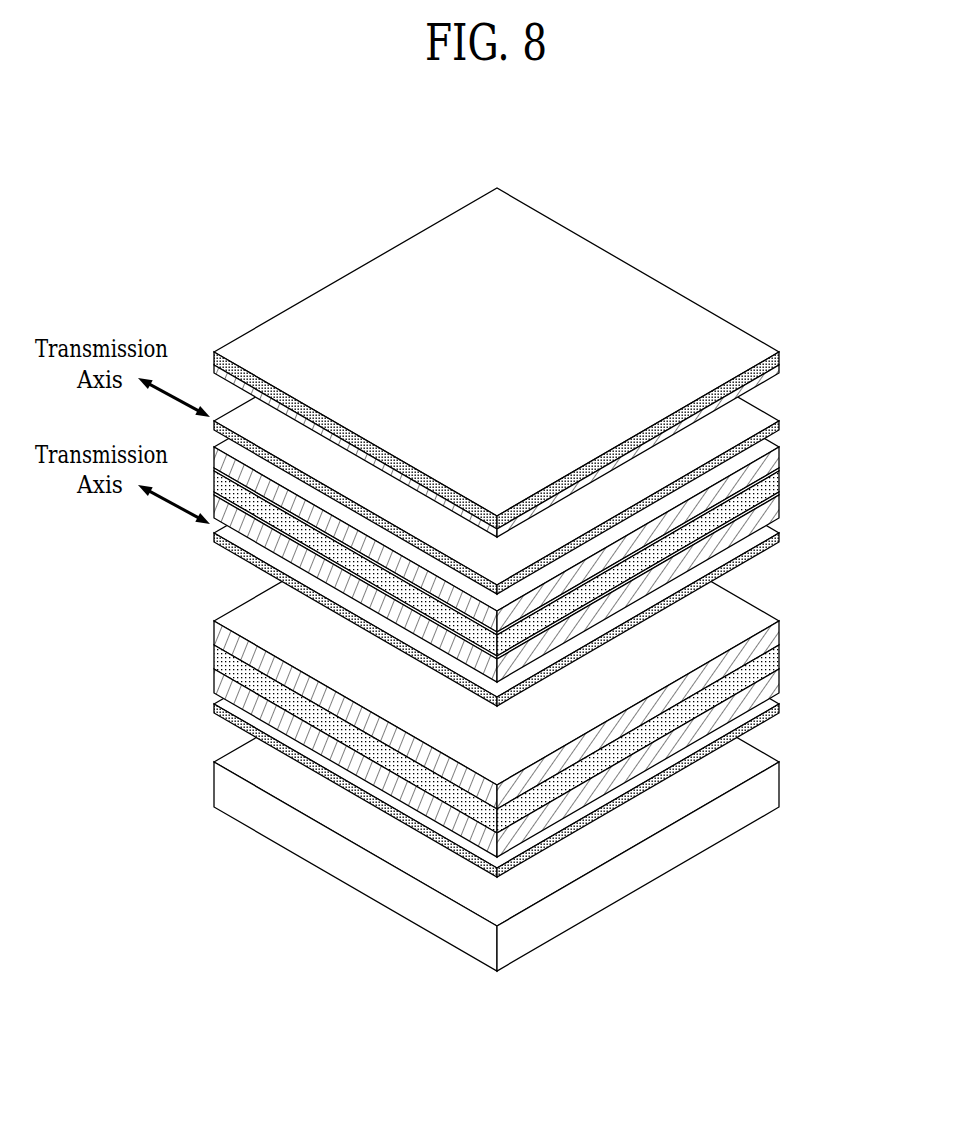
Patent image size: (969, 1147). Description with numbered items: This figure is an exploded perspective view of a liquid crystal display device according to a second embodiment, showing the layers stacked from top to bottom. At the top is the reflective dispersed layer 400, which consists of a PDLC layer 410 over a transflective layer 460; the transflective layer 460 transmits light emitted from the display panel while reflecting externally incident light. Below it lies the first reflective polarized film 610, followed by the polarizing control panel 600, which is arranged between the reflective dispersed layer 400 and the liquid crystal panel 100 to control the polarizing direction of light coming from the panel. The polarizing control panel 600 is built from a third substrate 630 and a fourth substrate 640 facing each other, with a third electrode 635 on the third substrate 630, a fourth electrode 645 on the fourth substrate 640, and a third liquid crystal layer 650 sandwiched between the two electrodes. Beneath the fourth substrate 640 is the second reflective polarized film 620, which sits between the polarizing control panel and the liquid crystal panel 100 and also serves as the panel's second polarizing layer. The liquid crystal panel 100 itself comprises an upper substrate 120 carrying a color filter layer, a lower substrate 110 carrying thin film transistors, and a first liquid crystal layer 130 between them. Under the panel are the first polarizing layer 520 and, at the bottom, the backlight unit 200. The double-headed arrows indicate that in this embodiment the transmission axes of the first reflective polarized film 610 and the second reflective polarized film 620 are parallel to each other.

The reflective dispersed layer 400 is at (564, 362).
The PDLC layer 410 is at (780, 356).
The transflective layer 460 is at (780, 369).
The first reflective polarized film 610 is at (780, 425).
The polarizing control panel 600 is at (564, 482).
The third substrate 630 is at (780, 452).
The third electrode 635 is at (780, 469).
The third liquid crystal layer 650 is at (780, 482).
The fourth electrode 645 is at (780, 494).
The fourth substrate 640 is at (534, 588).
The second reflective polarized film 620 is at (780, 538).
The liquid crystal display panel 100 is at (564, 657).
The upper substrate 120 is at (780, 633).
The first liquid crystal layer 130 is at (780, 657).
The lower substrate 110 is at (780, 681).
The first polarizing layer 520 is at (780, 708).
The backlight unit 200 is at (770, 783).